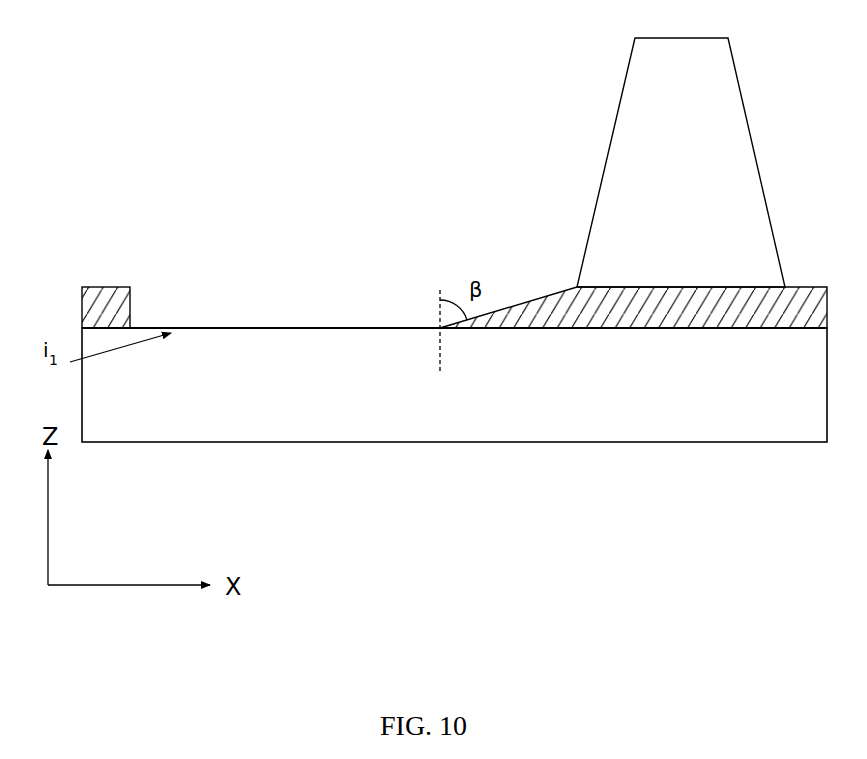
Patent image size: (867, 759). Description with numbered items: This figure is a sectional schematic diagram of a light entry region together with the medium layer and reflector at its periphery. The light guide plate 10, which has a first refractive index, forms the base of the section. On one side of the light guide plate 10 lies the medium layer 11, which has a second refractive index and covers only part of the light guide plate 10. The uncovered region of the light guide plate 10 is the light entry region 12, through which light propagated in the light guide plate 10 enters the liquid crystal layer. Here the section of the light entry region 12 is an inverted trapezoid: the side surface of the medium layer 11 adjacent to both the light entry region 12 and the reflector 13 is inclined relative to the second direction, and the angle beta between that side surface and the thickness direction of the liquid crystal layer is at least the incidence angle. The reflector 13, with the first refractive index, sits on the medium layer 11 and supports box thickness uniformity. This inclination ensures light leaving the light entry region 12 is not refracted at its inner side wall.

The light guide plate 10 is at (723, 418).
The medium layer 11 is at (648, 318).
The light entry region 12 is at (305, 320).
The reflector 13 is at (660, 155).